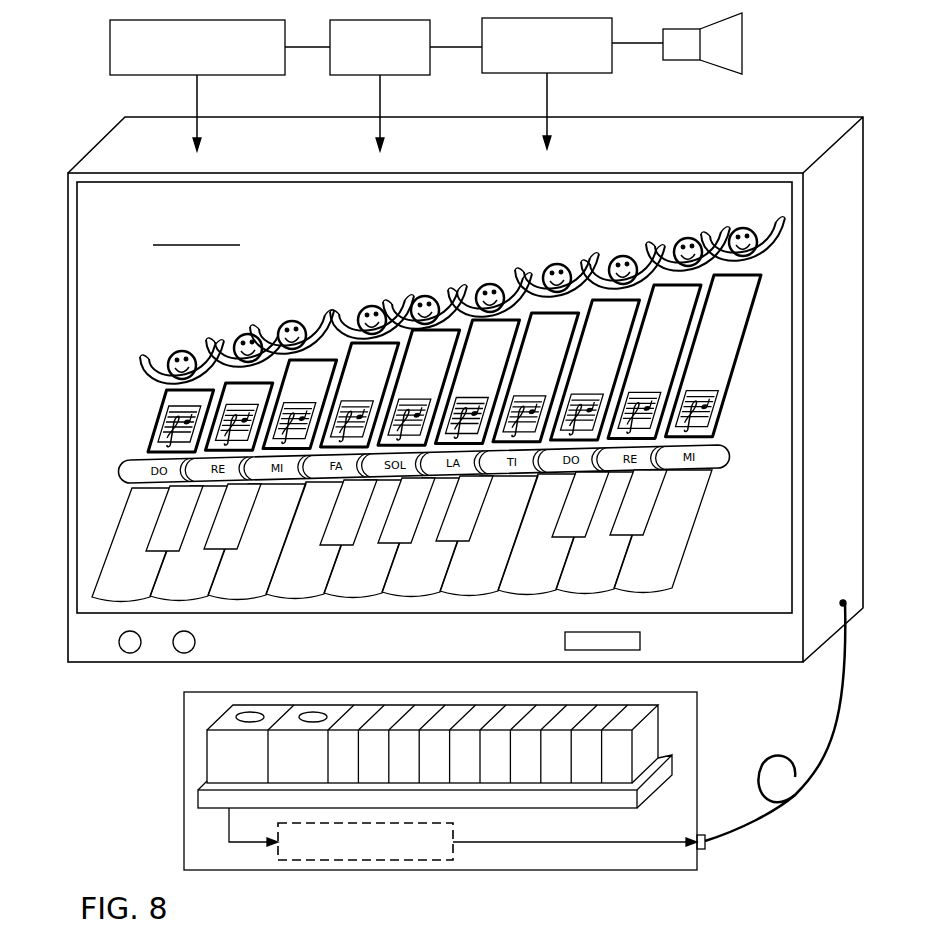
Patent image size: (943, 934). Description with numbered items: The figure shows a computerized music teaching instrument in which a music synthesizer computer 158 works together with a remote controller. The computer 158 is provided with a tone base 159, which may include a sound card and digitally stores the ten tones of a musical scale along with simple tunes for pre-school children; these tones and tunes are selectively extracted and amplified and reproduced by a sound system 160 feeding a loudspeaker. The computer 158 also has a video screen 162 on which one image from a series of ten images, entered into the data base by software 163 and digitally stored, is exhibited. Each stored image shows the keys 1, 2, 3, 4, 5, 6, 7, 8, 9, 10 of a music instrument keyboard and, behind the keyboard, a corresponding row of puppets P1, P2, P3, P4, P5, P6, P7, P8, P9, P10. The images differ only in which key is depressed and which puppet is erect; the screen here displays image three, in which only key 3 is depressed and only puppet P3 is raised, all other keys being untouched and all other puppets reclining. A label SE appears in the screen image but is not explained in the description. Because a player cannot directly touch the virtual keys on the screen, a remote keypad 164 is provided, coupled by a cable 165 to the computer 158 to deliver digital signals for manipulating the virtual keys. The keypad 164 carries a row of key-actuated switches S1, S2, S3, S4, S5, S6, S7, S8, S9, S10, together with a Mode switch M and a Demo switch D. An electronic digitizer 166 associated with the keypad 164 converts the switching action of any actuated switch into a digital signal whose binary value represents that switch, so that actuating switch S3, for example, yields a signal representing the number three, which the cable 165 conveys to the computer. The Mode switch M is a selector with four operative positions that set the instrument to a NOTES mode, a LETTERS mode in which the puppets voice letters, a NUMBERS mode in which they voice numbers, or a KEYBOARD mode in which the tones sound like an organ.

The music synthesizer computer 158 is at (810, 135).
The tone base 159 is at (397, 75).
The sound system 160 is at (575, 73).
The video screen 162 is at (151, 275).
The software 163 is at (228, 75).
The keypad 164 is at (658, 727).
The cable 165 is at (745, 818).
The electronic digitizer 166 is at (398, 860).
The puppet P1 is at (178, 350).
The puppet P2 is at (245, 333).
The puppet P3 is at (292, 320).
The puppet P4 is at (374, 305).
The puppet P5 is at (426, 295).
The puppet P6 is at (491, 283).
The puppet P7 is at (558, 263).
The puppet P8 is at (624, 255).
The puppet P9 is at (689, 238).
The puppet P10 is at (744, 228).
The selected element card SE is at (340, 400).
The Demo switch D is at (250, 712).
The Mode switch M is at (313, 712).
The key-actuated switch S1 is at (359, 744).
The key-actuated switch S2 is at (390, 744).
The key-actuated switch S3 is at (420, 744).
The key-actuated switch S4 is at (451, 744).
The key-actuated switch S5 is at (480, 744).
The key-actuated switch S6 is at (511, 744).
The key-actuated switch S7 is at (543, 744).
The key-actuated switch S8 is at (572, 744).
The key-actuated switch S9 is at (602, 744).
The key-actuated switch S10 is at (622, 737).
The key 1 is at (114, 587).
The key 2 is at (172, 586).
The key 3 is at (231, 586).
The key 4 is at (289, 585).
The key 5 is at (347, 585).
The key 6 is at (405, 584).
The key 7 is at (464, 584).
The key 8 is at (522, 583).
The key 9 is at (580, 583).
The key 10 is at (635, 582).